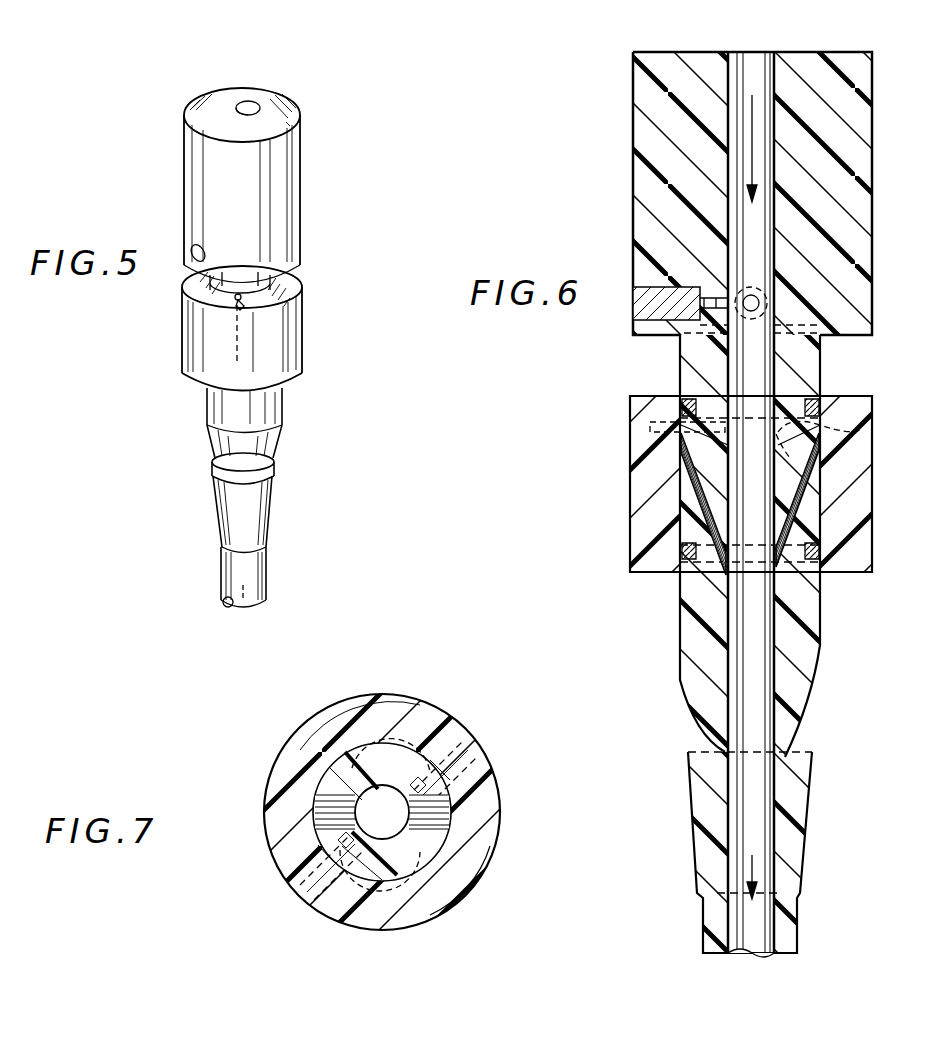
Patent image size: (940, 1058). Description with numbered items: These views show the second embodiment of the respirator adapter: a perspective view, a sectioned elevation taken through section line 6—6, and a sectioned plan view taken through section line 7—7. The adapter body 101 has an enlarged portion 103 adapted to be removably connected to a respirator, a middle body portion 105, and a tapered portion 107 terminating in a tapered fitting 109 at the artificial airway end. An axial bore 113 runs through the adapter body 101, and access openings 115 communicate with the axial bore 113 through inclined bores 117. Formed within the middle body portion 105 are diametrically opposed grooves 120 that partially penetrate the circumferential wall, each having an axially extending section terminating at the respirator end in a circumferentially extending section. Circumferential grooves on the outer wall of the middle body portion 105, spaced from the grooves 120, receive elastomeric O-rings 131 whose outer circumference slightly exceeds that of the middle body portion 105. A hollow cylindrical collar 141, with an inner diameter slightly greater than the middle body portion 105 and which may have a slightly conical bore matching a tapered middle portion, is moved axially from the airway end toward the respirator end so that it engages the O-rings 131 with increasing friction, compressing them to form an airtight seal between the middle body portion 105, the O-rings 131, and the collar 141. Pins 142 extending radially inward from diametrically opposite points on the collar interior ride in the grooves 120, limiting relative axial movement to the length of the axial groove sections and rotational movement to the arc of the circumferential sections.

In FIG. 5, the section line 6— 6 is at (243, 30).
In FIG. 6, the section line 7— 7 is at (935, 465).
In FIG. 5, the adapter body 101 is at (182, 312).
In FIG. 6, the adapter body 101 is at (632, 398).
In FIG. 5, the enlarged portion 103 is at (302, 194).
In FIG. 6, the enlarged portion 103 is at (866, 166).
In FIG. 5, the middle body portion 105 is at (258, 408).
In FIG. 6, the middle body portion 105 is at (822, 668).
In FIG. 5, the tapered portion 107 is at (243, 503).
In FIG. 6, the tapered portion 107 is at (780, 776).
In FIG. 5, the tapered fitting 109 is at (243, 577).
In FIG. 6, the tapered fitting 109 is at (762, 878).
In FIG. 6, the axial bore 113 is at (738, 660).
In FIG. 6, the access openings 115 is at (700, 466).
In FIG. 6, the inclined bores 117 is at (690, 526).
In FIG. 7, the inclined bores 117 is at (332, 794).
In FIG. 6, the grooves 120 is at (850, 424).
In FIG. 6, the O-rings 131 is at (815, 398).
In FIG. 5, the cylindrical collar 141 is at (302, 340).
In FIG. 7, the cylindrical collar 141 is at (440, 722).
In FIG. 7, the pins 142 is at (478, 736).